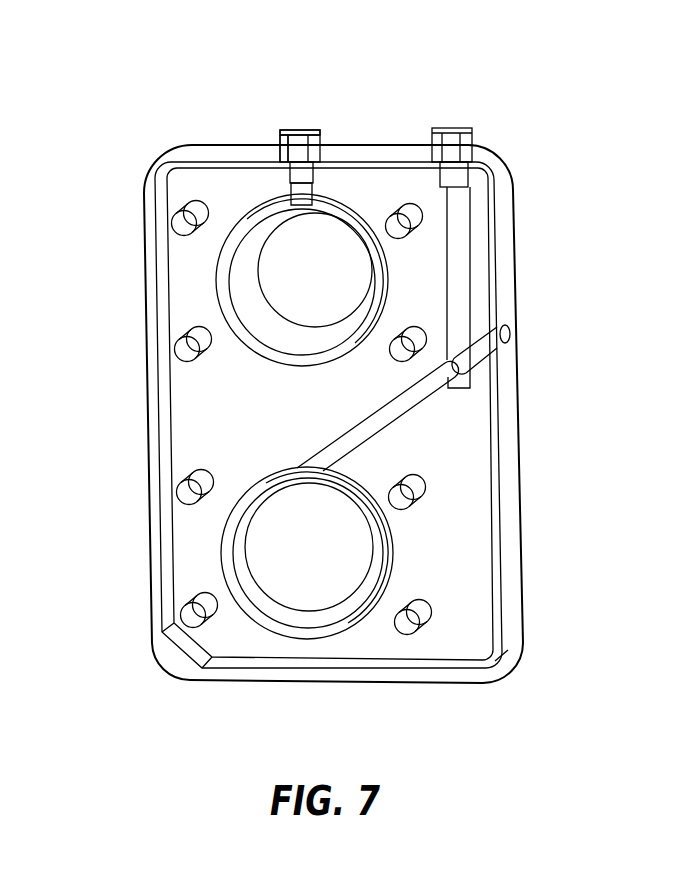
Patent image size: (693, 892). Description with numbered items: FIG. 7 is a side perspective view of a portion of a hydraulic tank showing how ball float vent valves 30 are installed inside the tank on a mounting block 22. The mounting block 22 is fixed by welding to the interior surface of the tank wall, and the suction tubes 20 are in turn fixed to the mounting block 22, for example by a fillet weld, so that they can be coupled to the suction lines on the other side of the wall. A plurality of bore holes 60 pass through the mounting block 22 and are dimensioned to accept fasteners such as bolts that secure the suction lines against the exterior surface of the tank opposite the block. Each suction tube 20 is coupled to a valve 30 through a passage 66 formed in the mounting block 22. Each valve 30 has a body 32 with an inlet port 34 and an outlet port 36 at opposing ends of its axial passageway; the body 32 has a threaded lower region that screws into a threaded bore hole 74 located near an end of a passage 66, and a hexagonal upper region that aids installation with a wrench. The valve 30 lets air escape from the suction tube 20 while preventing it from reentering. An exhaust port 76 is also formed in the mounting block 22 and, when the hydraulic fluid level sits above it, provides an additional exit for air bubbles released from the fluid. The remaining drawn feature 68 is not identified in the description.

The suction tube 20 is at (333, 570).
The mounting block 22 is at (147, 212).
The ball float vent valve 30 is at (315, 130).
The body 32 is at (280, 142).
The inlet port 34 is at (465, 187).
The outlet port 36 is at (296, 130).
The bore holes 60 is at (400, 340).
The passage 66 is at (305, 196).
The rim 68 is at (406, 150).
The threaded bore hole 74 is at (290, 177).
The exhaust port 76 is at (482, 348).